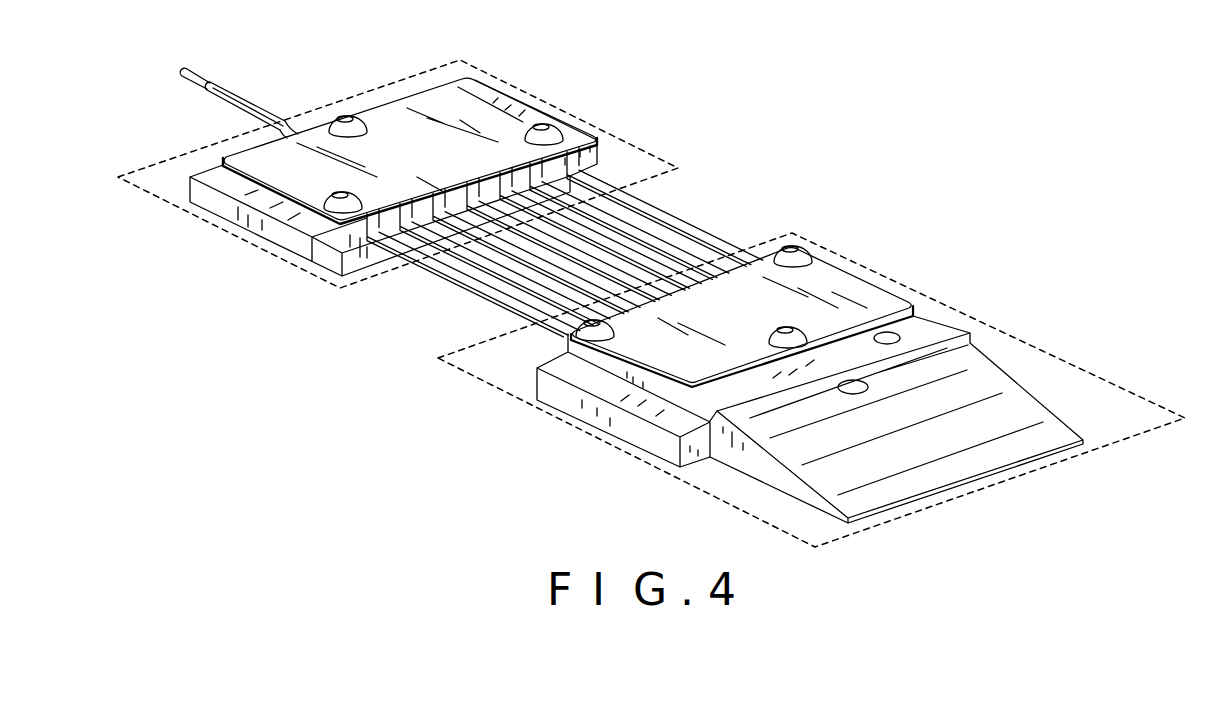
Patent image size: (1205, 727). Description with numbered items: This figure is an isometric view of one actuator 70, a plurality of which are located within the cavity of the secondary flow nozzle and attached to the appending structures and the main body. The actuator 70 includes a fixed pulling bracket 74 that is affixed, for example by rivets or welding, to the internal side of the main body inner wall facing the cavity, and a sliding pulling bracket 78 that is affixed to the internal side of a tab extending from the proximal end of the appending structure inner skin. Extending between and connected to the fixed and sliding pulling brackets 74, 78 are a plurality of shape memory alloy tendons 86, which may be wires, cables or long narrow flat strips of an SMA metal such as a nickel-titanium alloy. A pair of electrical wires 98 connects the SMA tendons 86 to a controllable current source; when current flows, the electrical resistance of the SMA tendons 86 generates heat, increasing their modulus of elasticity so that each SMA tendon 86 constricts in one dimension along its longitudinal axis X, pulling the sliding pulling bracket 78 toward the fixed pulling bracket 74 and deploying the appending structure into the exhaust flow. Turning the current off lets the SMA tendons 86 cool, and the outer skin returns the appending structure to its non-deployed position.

The actuator 70 is at (784, 146).
The fixed pulling bracket 74 is at (495, 74).
The sliding pulling bracket 78 is at (947, 308).
The shape memory alloy (SMA) tendon 86 is at (502, 278).
The electrical wires 98 is at (205, 76).